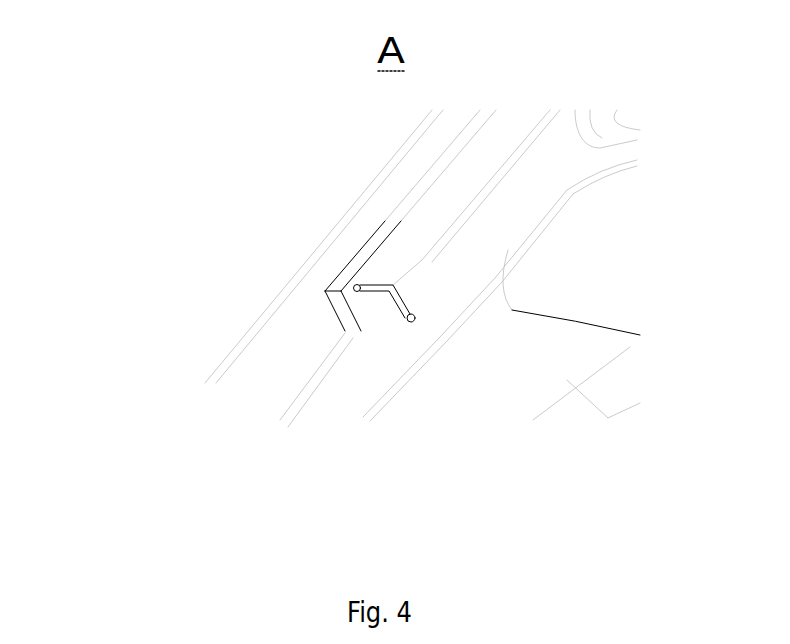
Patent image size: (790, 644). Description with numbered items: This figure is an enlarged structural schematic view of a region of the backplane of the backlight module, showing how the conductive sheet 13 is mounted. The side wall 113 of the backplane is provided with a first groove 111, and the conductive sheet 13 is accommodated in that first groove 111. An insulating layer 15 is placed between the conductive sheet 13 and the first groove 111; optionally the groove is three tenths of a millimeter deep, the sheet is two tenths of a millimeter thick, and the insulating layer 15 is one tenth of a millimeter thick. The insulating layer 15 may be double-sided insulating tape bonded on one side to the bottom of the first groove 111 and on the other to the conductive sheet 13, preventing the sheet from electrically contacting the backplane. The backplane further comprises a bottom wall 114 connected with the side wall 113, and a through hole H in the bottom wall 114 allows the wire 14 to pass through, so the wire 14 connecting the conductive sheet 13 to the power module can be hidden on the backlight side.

The conductive sheet 13 is at (388, 258).
The insulating layer 15 is at (335, 295).
The first groove 111 is at (322, 314).
The side wall 113 is at (243, 355).
The wire 14 is at (380, 315).
The through hole H is at (431, 322).
The bottom wall 114 is at (377, 416).